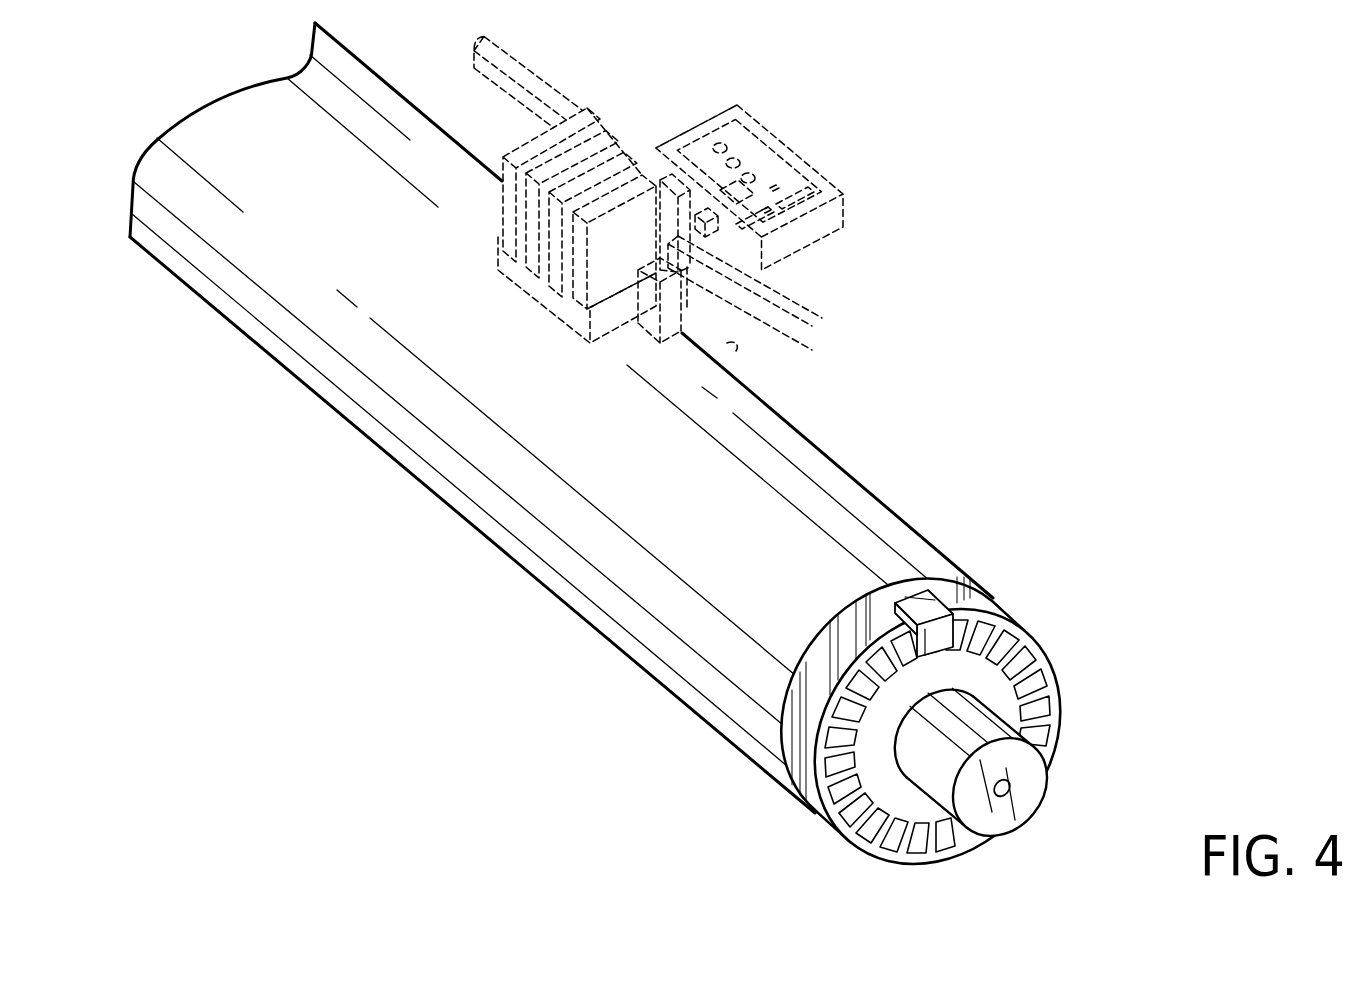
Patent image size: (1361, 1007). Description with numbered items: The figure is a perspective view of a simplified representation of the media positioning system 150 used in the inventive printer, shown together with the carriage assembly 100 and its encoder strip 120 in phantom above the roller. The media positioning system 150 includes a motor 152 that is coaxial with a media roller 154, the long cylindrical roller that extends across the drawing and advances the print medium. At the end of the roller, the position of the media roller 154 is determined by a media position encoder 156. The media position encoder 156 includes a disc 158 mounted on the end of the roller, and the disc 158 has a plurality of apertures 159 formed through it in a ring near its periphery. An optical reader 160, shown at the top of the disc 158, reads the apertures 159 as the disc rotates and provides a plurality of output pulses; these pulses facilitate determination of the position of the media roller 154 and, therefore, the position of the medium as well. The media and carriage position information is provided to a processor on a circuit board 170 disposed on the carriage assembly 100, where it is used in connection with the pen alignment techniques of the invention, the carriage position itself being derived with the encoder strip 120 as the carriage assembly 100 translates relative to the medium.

The carriage assembly 100 is at (505, 139).
The encoder strip 120 is at (506, 57).
The media positioning system 150 is at (272, 427).
The motor 152 is at (1040, 777).
The media roller 154 is at (490, 535).
The media position encoder 156 is at (936, 707).
The disc 158 is at (1058, 661).
The apertures 159 is at (860, 834).
The optical reader 160 is at (930, 590).
The circuit board 170 is at (793, 187).